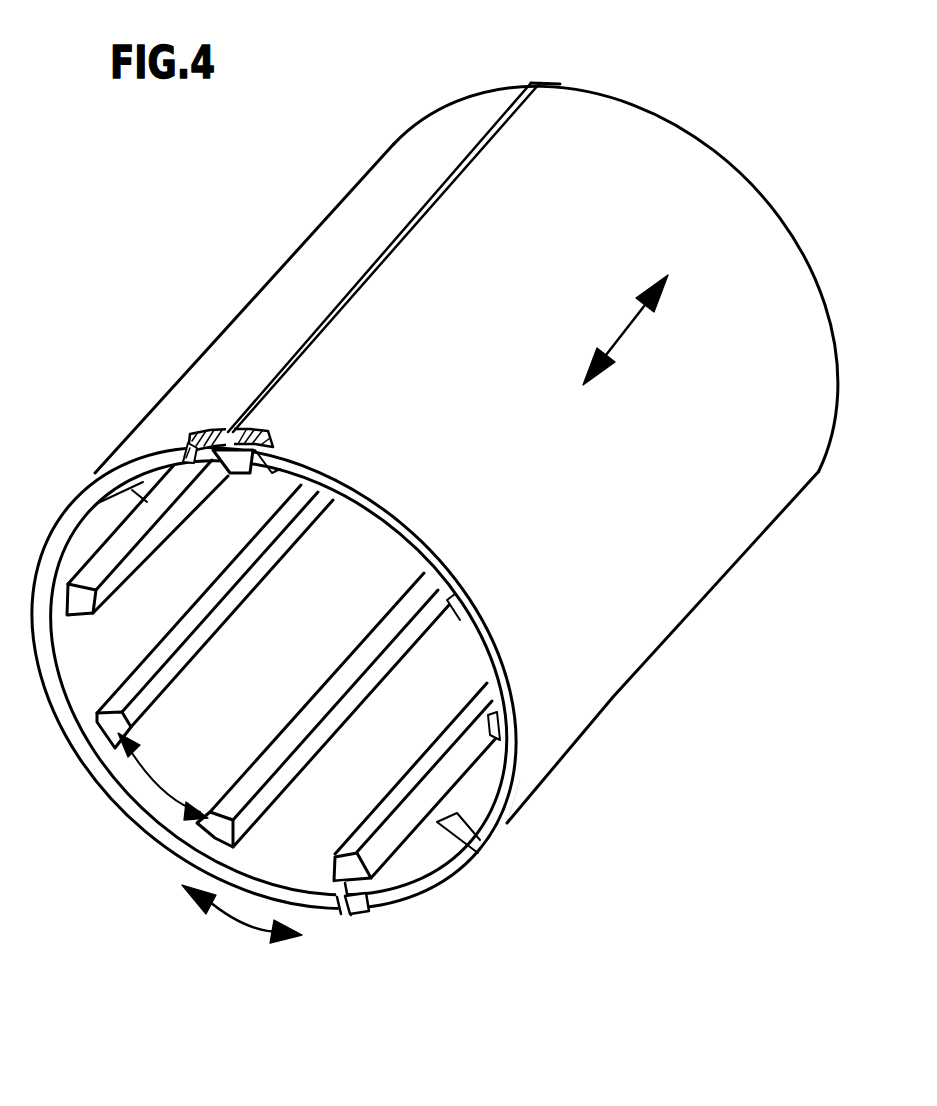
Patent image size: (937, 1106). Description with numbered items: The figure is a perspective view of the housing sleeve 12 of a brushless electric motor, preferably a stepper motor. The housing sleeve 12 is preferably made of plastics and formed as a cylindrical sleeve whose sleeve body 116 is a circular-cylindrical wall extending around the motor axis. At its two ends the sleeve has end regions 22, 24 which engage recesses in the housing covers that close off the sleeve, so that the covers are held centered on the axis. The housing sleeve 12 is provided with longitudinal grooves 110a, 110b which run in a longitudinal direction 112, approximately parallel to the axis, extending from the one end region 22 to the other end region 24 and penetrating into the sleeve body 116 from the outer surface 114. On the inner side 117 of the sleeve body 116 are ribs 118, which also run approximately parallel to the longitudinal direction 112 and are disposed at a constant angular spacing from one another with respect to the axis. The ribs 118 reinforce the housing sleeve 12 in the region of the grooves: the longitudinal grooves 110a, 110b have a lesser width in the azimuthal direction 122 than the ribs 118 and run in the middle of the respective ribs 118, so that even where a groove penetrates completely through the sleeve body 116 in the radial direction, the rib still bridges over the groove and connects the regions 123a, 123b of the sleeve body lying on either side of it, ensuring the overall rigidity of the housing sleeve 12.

The housing sleeve 12 is at (657, 600).
The end region 22 is at (160, 430).
The end region 24 is at (670, 163).
The longitudinal groove 110a is at (393, 233).
The longitudinal groove 110b is at (350, 884).
The longitudinal direction 112 is at (628, 332).
The outer surface 114 is at (548, 123).
The sleeve body 116 is at (510, 773).
The inner side 117 is at (128, 660).
The ribs 118 is at (243, 465).
The azimuthal direction 122 is at (235, 916).
The region of the sleeve body 123a is at (327, 290).
The region of the sleeve body 123b is at (327, 380).